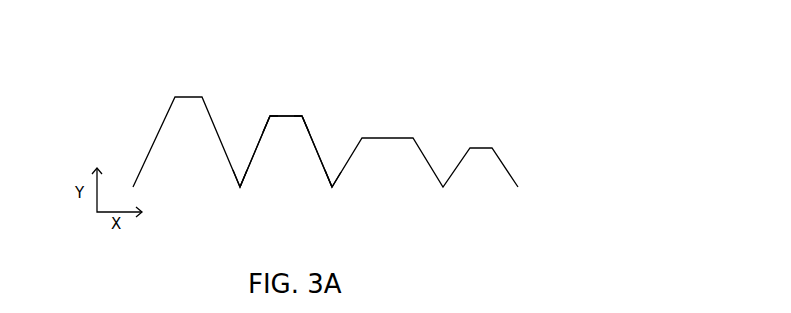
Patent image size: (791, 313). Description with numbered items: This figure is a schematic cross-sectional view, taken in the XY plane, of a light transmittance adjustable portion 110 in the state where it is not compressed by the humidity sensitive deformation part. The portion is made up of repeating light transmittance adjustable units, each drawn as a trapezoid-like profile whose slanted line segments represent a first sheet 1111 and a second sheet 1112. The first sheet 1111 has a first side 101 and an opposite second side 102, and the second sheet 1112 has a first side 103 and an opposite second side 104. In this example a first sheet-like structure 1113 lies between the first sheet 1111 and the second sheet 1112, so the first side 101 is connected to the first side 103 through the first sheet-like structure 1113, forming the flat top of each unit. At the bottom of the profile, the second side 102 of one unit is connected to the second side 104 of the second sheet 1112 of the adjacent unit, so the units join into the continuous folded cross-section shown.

The trapezoidal waveform pattern 110 is at (325, 103).
The first side 101 is at (236, 88).
The second side 102 is at (215, 191).
The first side 103 is at (333, 106).
The second side 104 is at (307, 191).
The first sheet 1111 is at (223, 128).
The second sheet 1112 is at (350, 149).
The first sheet-like structure 1113 is at (304, 85).